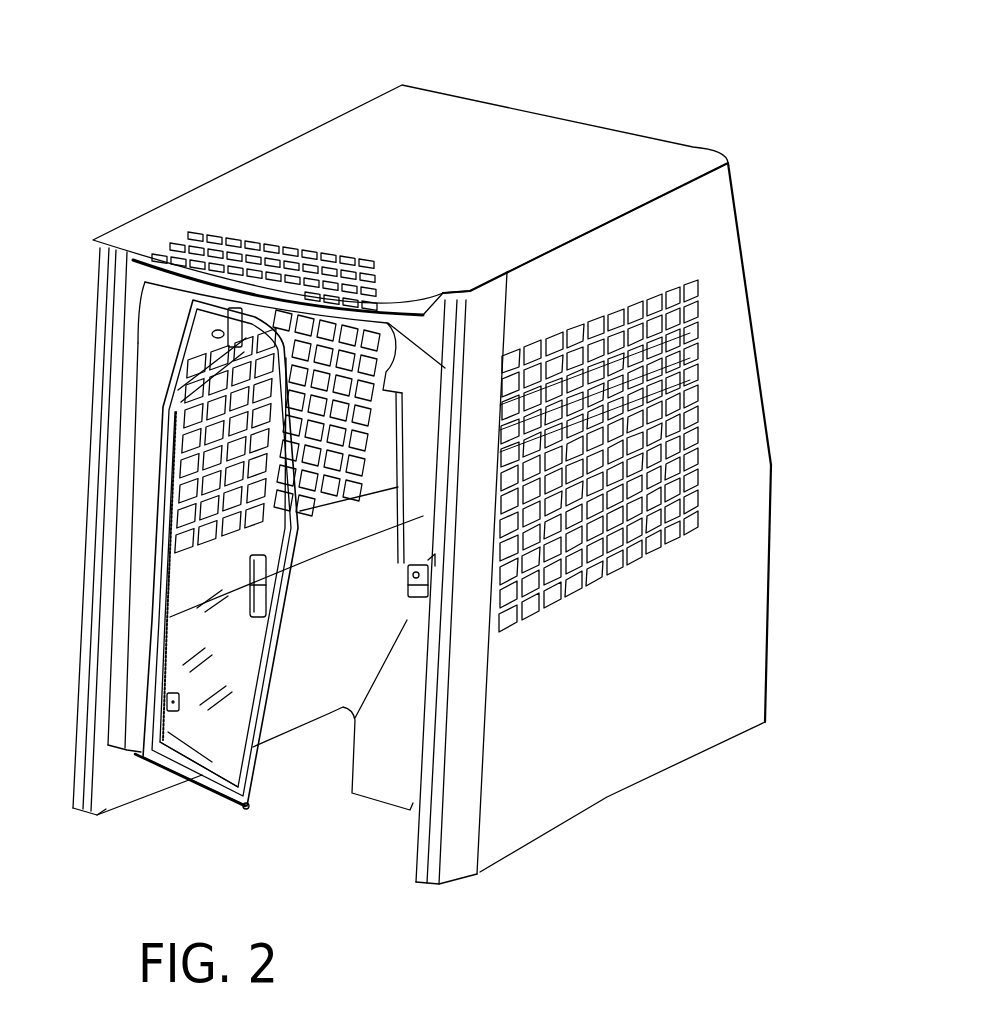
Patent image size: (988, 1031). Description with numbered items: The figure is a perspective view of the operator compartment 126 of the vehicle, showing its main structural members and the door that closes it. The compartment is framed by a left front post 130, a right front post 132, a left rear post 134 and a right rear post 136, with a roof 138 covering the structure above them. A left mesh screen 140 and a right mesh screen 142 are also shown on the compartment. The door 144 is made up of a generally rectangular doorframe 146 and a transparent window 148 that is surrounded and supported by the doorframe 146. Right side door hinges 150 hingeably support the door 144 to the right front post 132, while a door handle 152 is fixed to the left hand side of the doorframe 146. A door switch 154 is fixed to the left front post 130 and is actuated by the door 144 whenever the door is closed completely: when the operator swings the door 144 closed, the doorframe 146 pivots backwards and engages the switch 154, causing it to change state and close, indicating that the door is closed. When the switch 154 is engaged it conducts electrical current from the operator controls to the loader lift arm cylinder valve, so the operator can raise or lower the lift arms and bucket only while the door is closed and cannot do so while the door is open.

The operator compartment 126 is at (558, 89).
The left front post 130 is at (493, 315).
The right front post 132 is at (100, 350).
The left rear post 134 is at (705, 258).
The right rear post 136 is at (413, 463).
The roof 138 is at (352, 167).
The left mesh screen 140 is at (703, 367).
The right mesh screen 142 is at (173, 493).
The door 144 is at (206, 790).
The doorframe 146 is at (260, 683).
The transparent window 148 is at (210, 723).
The right side door hinges 150 is at (163, 427).
The door handle 152 is at (242, 593).
The door switch 154 is at (410, 600).